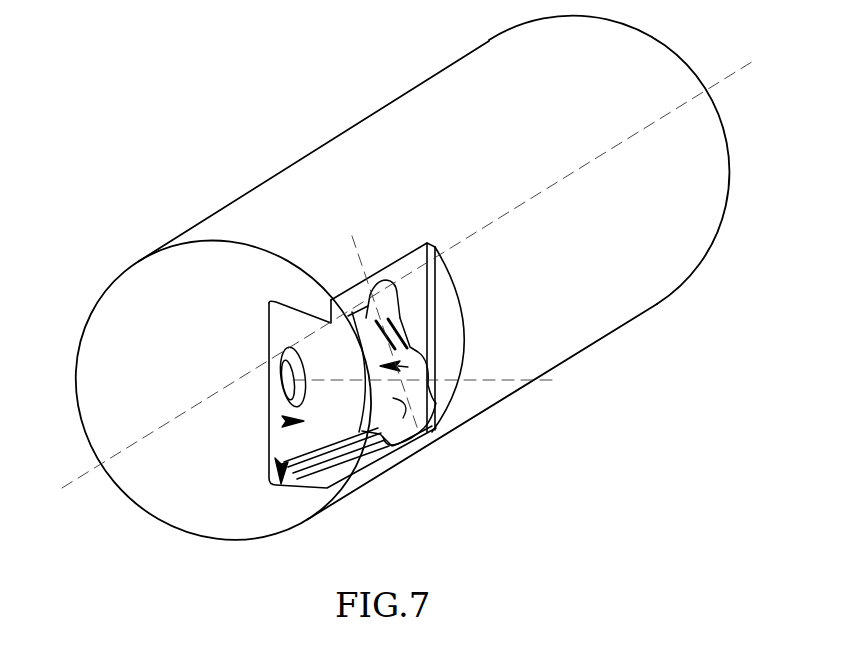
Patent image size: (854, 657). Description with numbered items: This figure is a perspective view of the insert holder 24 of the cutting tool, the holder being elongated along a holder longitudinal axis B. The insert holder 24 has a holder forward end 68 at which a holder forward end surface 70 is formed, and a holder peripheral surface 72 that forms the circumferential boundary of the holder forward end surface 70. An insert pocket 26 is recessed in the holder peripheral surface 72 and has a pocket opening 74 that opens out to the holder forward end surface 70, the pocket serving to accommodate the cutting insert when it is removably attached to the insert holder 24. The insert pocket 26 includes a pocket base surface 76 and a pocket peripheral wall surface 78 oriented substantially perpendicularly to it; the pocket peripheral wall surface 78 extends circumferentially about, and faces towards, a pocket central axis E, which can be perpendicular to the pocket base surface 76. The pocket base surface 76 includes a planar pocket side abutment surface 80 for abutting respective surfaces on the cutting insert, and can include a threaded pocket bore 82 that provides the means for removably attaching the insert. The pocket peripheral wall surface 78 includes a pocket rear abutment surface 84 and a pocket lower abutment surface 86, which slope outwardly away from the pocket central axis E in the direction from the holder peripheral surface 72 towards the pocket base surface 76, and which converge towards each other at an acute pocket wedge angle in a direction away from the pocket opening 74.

The insert holder 24 is at (228, 147).
The insert pocket 26 is at (331, 351).
The holder forward end 68 is at (234, 270).
The holder forward end surface 70 is at (97, 348).
The holder peripheral surface 72 is at (362, 163).
The pocket opening 74 is at (286, 482).
The pocket base surface 76 is at (313, 467).
The pocket peripheral wall surface 78 is at (408, 367).
The pocket side abutment surface 80 is at (282, 322).
The threaded pocket bore 82 is at (297, 392).
The pocket rear abutment surface 84 is at (400, 343).
The pocket lower abutment surface 86 is at (286, 421).
The holder longitudinal axis B is at (746, 68).
The pocket central axis E is at (553, 380).